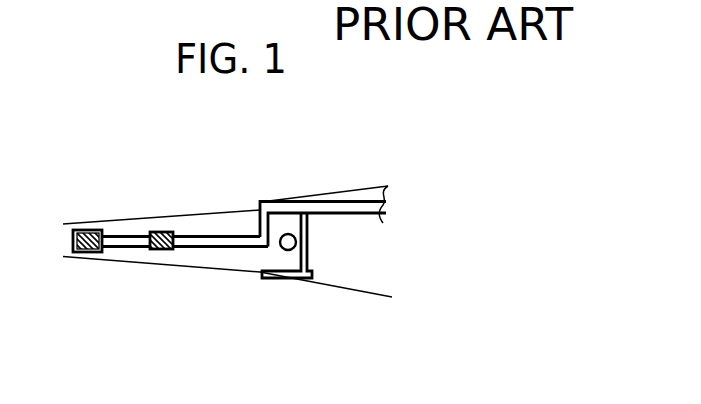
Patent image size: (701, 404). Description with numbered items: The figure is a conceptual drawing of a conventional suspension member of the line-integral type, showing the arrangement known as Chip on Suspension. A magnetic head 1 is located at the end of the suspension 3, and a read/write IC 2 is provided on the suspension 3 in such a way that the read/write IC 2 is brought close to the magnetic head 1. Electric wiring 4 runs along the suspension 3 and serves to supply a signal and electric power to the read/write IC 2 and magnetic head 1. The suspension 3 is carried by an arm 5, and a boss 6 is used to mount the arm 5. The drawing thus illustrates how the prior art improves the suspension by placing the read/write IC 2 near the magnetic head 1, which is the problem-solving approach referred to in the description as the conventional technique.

The magnetic head 1 is at (75, 252).
The read/write IC 2 is at (162, 232).
The suspension 3 is at (230, 213).
The electric wiring 4 is at (124, 246).
The arm 5 is at (373, 272).
The boss 6 is at (283, 249).